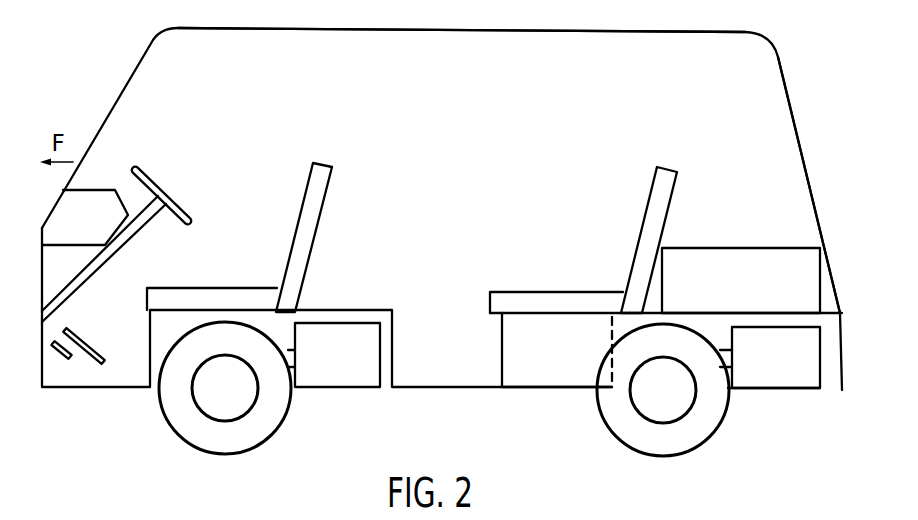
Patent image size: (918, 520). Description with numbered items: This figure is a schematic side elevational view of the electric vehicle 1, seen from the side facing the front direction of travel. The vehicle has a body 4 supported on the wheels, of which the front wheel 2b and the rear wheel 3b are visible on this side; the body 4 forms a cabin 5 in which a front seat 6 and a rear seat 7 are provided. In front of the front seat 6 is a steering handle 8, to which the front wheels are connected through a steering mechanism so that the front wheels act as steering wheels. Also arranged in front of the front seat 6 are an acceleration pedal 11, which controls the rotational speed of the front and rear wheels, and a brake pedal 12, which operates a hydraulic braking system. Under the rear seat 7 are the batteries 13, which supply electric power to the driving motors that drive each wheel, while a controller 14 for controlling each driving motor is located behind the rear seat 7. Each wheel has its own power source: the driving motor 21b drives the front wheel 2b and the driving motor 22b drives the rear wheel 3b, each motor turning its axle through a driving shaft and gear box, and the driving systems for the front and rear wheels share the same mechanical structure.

The electric vehicle 1 is at (112, 65).
The front wheel 2b is at (166, 415).
The rear wheel 3b is at (712, 436).
The body 4 is at (798, 137).
The cabin 5 is at (445, 132).
The front seat 6 is at (309, 182).
The rear seat 7 is at (646, 218).
The steering handle 8 is at (155, 188).
The acceleration pedal 11 is at (96, 348).
The brake pedal 12 is at (62, 358).
The batteries 13 is at (566, 354).
The controller 14 is at (756, 287).
The driving motor 21b is at (352, 382).
The driving motor 22b is at (797, 380).